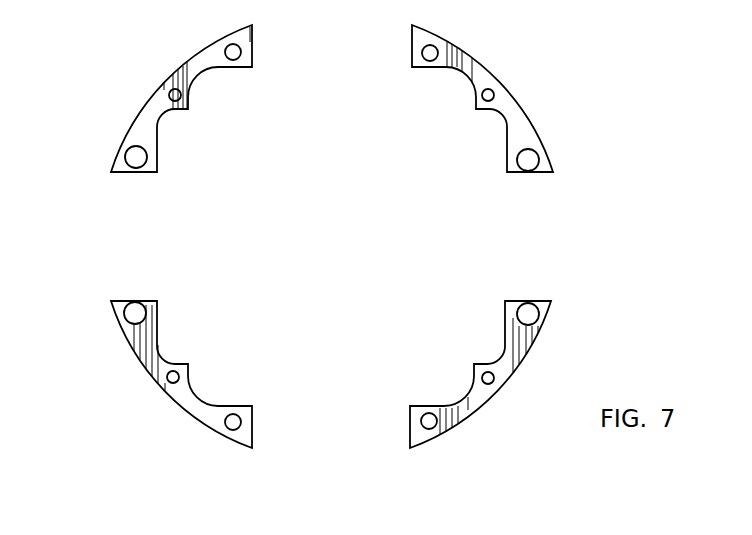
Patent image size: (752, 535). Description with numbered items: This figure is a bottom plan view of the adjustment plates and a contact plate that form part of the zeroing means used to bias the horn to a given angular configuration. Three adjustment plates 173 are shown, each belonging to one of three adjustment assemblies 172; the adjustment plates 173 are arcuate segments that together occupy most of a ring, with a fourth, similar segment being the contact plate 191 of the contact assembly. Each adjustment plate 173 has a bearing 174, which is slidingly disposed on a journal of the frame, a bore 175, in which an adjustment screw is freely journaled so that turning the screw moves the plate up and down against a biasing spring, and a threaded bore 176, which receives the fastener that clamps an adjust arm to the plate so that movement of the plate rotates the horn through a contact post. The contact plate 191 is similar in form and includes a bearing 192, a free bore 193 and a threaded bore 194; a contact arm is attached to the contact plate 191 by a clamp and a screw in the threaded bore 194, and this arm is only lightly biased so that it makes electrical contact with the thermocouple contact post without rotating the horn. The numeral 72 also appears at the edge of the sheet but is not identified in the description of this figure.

The backing plate 72 is at (309, 6).
The adjustment assembly 172 is at (140, 135).
The adjustment plate 173 is at (178, 68).
The bearing 174 is at (147, 157).
The bore 175 is at (182, 97).
The threaded bore 176 is at (242, 50).
The contact plate 191 is at (480, 57).
The bearing 192 is at (538, 155).
The free bore 193 is at (494, 92).
The threaded bore 194 is at (438, 49).